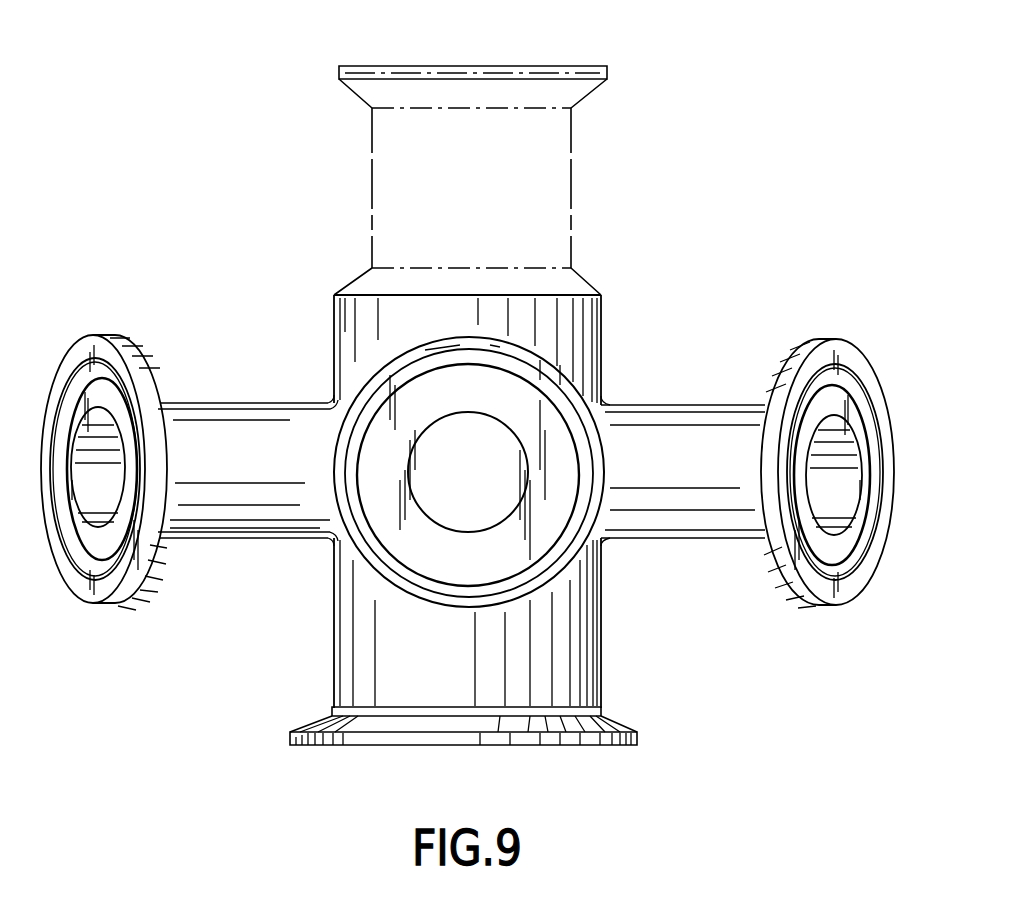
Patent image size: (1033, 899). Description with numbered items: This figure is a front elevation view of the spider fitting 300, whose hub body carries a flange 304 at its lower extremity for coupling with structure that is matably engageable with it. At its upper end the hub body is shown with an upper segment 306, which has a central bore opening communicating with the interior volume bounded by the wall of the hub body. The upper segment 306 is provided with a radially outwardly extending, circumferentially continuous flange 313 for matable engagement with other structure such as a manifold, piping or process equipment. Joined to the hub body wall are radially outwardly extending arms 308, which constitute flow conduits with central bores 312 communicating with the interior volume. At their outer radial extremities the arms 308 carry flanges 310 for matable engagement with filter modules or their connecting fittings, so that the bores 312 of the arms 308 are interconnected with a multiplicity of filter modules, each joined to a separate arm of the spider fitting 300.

The spider fitting 300 is at (279, 314).
The flange 304 is at (325, 727).
The upper segment 306 is at (580, 147).
The arms 308 is at (690, 520).
The flanges 310 is at (862, 592).
The central bores 312 is at (500, 452).
The flange 313 is at (541, 64).